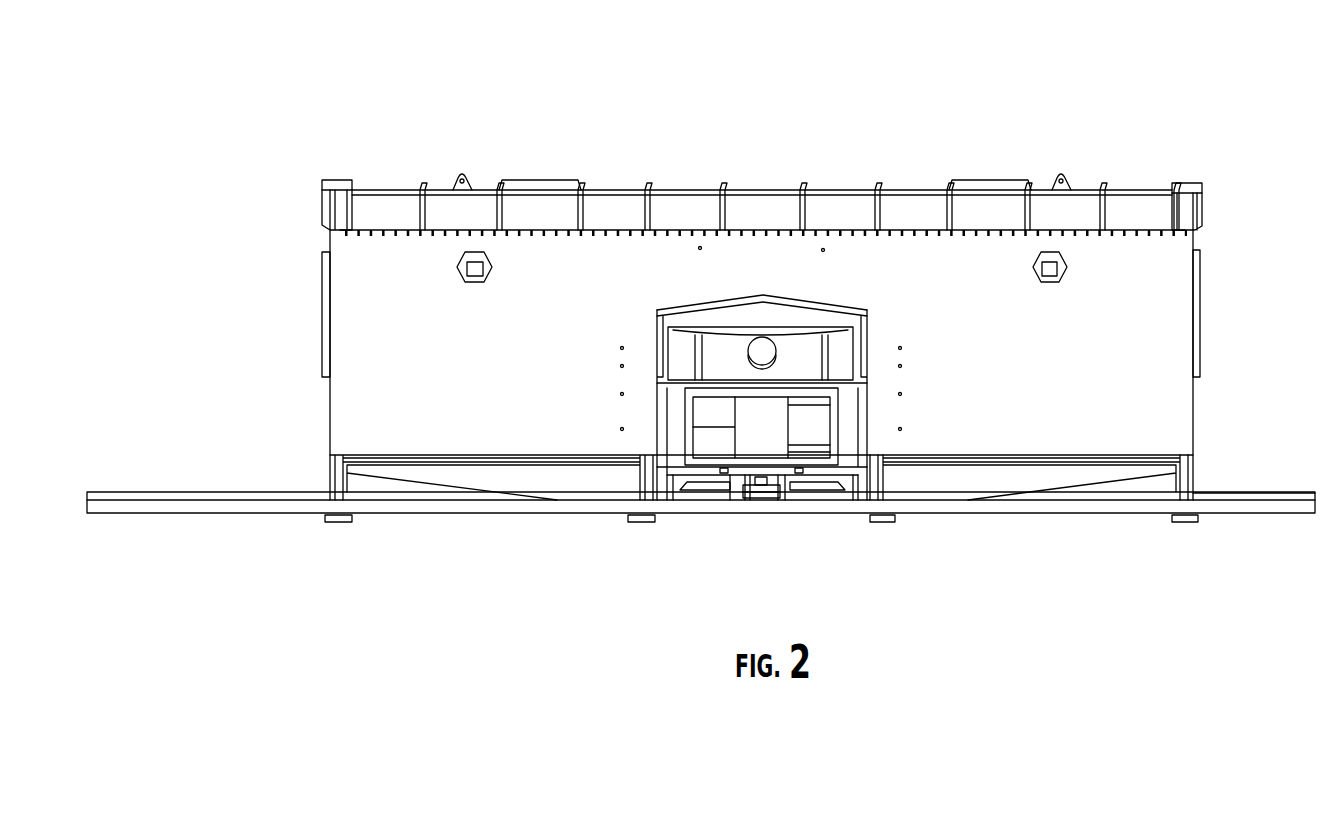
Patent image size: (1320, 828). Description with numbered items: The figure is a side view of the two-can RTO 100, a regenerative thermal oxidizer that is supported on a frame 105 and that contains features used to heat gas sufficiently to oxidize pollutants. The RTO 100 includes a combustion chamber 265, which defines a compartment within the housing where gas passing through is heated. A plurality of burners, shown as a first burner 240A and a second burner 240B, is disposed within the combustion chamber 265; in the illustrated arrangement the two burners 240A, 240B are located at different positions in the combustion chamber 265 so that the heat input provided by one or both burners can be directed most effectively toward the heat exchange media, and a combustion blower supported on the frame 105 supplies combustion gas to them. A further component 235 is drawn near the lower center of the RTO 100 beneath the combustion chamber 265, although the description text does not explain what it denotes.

The two-can RTO 100 is at (387, 137).
The frame 105 is at (240, 503).
The first burner 240A is at (471, 262).
The second burner 240B is at (1047, 262).
The combustion chamber 265 is at (716, 359).
The coupling box 235 is at (760, 470).